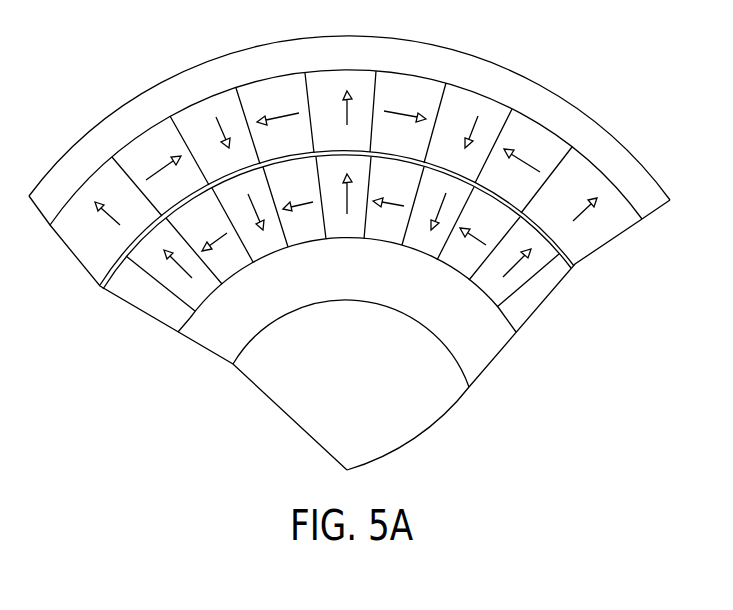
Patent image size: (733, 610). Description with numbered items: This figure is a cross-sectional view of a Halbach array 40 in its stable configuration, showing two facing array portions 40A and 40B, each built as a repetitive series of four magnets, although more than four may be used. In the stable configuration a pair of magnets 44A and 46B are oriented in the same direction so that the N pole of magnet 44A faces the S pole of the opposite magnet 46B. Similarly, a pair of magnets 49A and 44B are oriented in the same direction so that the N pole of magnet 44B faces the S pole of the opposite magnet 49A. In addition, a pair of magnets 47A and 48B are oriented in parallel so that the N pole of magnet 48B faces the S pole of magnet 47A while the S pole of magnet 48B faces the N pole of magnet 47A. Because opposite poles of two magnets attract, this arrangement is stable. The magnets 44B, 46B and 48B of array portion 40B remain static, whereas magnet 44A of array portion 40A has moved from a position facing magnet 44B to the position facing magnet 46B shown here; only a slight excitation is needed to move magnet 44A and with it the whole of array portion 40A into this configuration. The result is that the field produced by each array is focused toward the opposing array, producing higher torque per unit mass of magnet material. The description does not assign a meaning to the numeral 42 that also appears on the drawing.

The Halbach array 40 is at (126, 52).
The back iron ring 42 is at (540, 128).
The array portion 40A is at (167, 318).
The array portion 40B is at (72, 250).
The magnet 44A is at (352, 236).
The magnet 47A is at (391, 233).
The magnet 49A is at (429, 257).
The magnet 44B is at (492, 109).
The magnet 46B is at (355, 75).
The magnet 48B is at (409, 88).